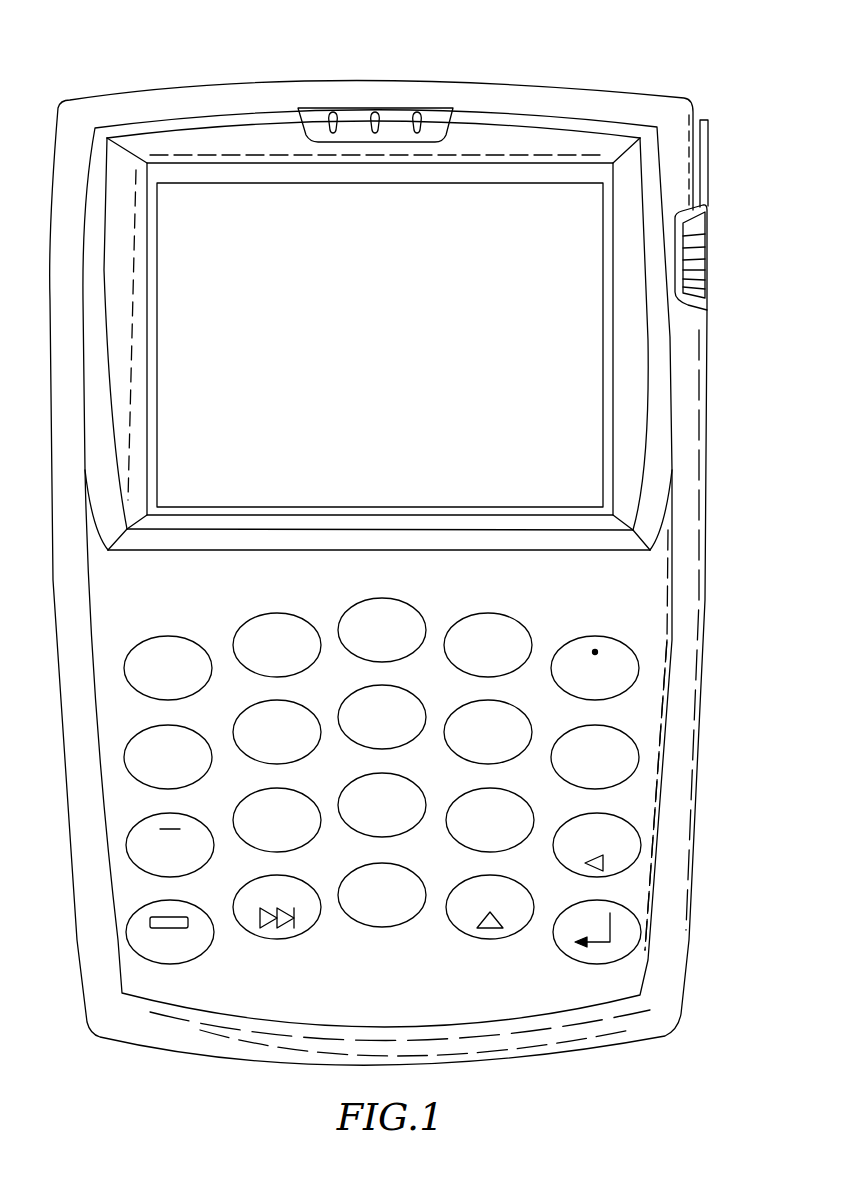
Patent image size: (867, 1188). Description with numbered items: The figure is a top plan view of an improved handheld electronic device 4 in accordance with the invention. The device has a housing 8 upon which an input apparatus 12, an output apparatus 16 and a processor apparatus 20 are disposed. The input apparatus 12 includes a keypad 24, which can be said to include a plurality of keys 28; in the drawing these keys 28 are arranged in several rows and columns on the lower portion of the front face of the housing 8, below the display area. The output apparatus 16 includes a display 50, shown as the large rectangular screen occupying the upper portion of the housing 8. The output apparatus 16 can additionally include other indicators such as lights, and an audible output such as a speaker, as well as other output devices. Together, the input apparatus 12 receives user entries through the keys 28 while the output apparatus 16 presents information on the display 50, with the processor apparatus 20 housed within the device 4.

The handheld electronic device 4 is at (553, 59).
The housing 8 is at (607, 90).
The input apparatus 12 is at (748, 419).
The output apparatus 16 is at (184, 444).
The processor apparatus 20 is at (120, 608).
The keypad 24 is at (645, 718).
The keys 28 is at (581, 636).
The display 50 is at (178, 318).